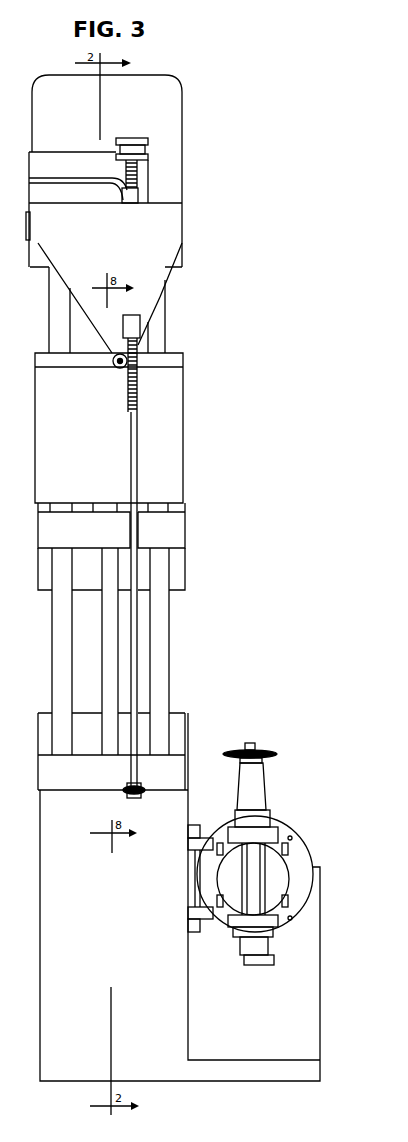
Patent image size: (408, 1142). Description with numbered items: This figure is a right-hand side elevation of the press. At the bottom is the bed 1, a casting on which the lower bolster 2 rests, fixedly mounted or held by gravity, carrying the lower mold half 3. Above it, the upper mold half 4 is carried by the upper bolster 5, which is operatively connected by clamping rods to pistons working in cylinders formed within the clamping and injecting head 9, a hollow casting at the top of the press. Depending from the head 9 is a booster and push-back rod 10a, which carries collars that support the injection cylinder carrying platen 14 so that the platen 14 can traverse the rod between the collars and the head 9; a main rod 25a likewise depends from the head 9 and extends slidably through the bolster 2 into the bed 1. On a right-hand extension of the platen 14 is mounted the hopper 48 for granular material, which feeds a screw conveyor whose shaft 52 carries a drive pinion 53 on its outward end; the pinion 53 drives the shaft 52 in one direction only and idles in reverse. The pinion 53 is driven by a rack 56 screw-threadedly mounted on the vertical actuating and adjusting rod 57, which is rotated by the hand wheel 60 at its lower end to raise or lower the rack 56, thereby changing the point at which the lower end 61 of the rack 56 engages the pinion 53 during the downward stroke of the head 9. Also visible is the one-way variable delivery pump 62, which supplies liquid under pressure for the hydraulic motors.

The bed 1 is at (124, 1017).
The lower bolster 2 is at (80, 766).
The lower mold half 3 is at (87, 720).
The upper mold half 4 is at (93, 578).
The upper bolster 5 is at (102, 540).
The clamping and injecting head 9 is at (138, 119).
The booster and push-back rod 10a is at (103, 646).
The injection cylinder carrying platen 14 is at (90, 452).
The main rod 25a is at (47, 650).
The hopper 48 is at (120, 248).
The shaft 52 is at (114, 367).
The drive pinion 53 is at (140, 362).
The rack 56 is at (123, 327).
The actuating and adjusting rod 57 is at (131, 478).
The hand wheel 60 is at (128, 793).
The lower end of the rack 61 is at (142, 345).
The one-way variable delivery pump 62 is at (313, 864).